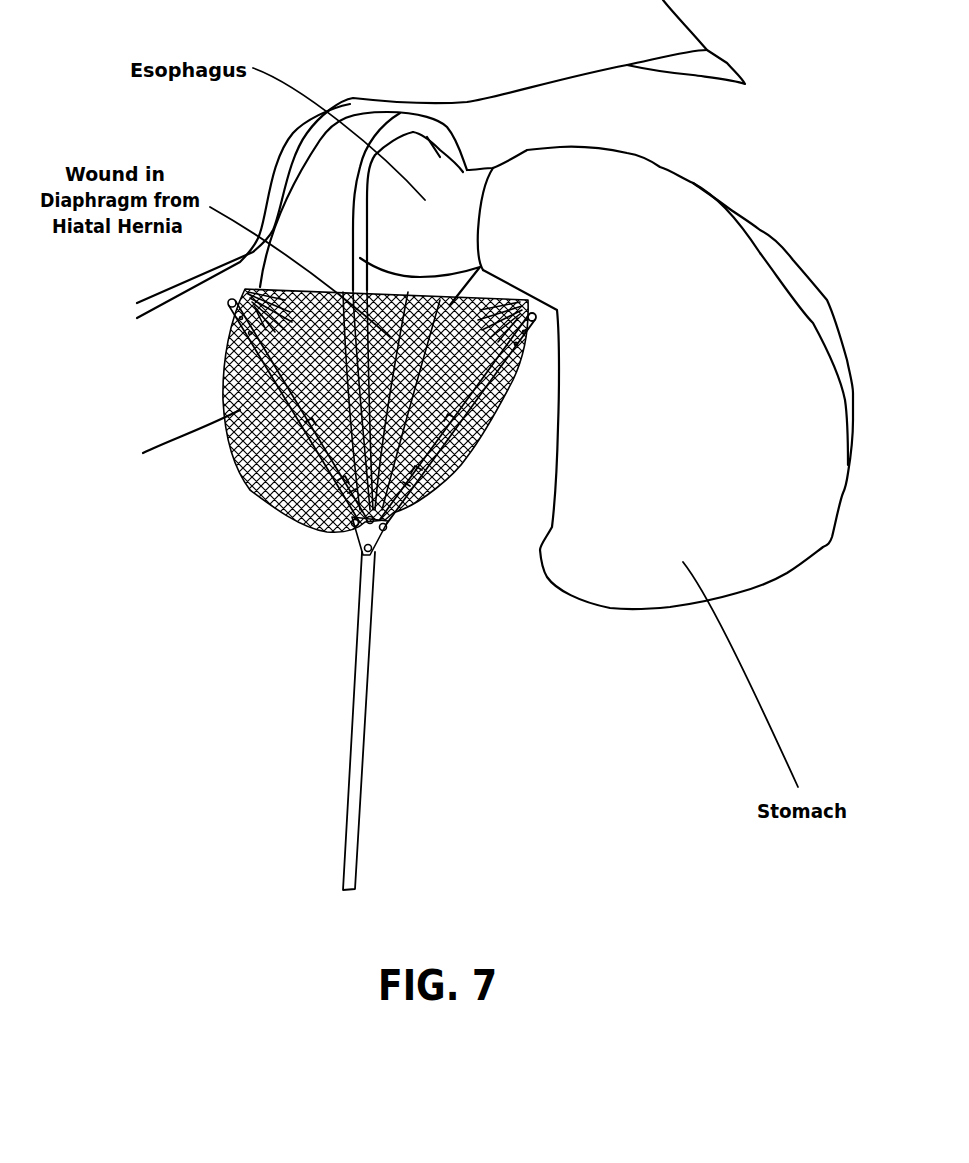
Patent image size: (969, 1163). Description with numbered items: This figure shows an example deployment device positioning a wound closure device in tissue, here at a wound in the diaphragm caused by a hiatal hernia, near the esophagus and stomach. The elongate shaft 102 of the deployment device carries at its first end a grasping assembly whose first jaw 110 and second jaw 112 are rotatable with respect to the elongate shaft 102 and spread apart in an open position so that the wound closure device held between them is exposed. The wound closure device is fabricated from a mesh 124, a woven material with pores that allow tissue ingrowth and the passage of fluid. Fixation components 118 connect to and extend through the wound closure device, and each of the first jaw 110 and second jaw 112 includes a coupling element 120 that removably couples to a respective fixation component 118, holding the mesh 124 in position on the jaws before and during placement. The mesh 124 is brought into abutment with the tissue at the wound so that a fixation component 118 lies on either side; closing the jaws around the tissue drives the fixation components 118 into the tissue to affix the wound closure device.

The elongate shaft 102 is at (350, 752).
The first jaw 110 is at (298, 432).
The second jaw 112 is at (455, 445).
The fixation component 118 is at (245, 289).
The coupling element 120 is at (227, 306).
The mesh 124 is at (313, 513).